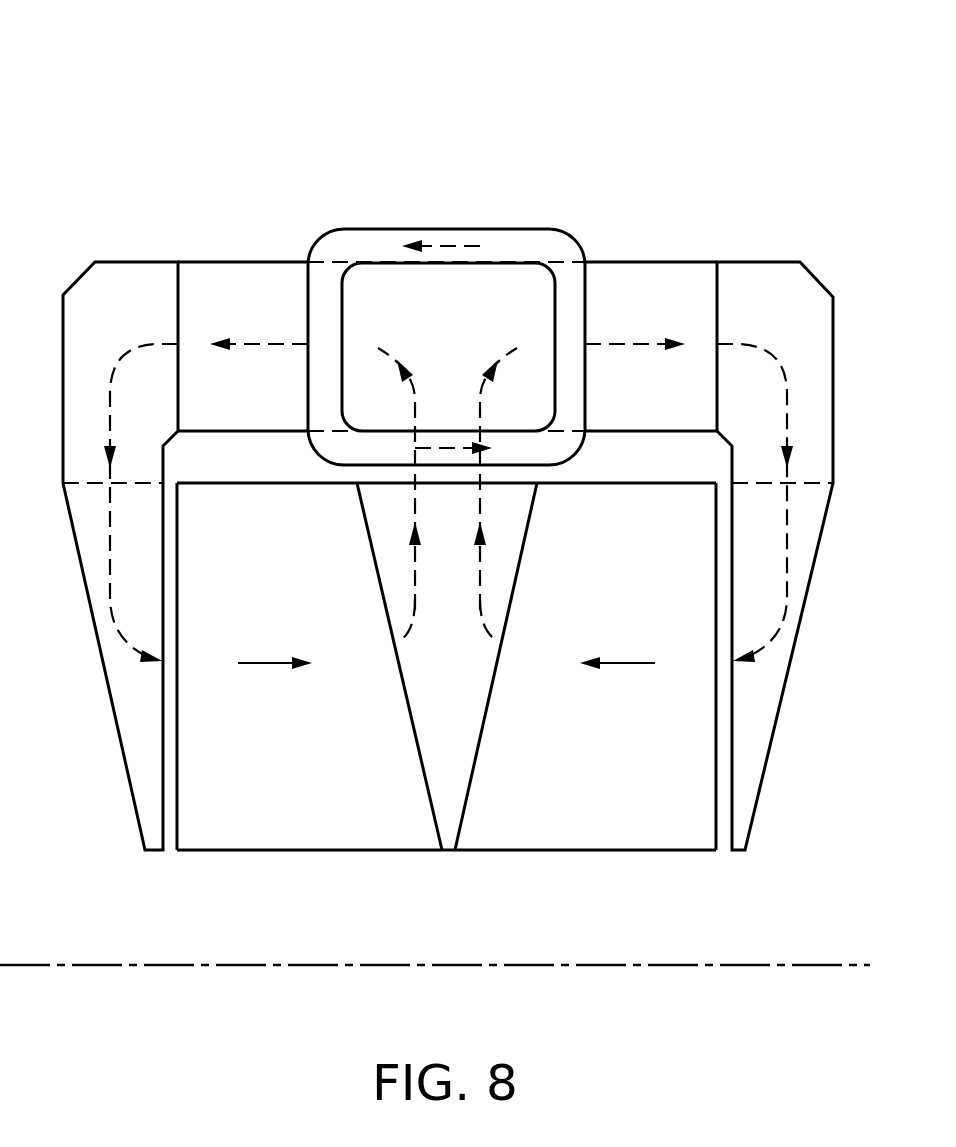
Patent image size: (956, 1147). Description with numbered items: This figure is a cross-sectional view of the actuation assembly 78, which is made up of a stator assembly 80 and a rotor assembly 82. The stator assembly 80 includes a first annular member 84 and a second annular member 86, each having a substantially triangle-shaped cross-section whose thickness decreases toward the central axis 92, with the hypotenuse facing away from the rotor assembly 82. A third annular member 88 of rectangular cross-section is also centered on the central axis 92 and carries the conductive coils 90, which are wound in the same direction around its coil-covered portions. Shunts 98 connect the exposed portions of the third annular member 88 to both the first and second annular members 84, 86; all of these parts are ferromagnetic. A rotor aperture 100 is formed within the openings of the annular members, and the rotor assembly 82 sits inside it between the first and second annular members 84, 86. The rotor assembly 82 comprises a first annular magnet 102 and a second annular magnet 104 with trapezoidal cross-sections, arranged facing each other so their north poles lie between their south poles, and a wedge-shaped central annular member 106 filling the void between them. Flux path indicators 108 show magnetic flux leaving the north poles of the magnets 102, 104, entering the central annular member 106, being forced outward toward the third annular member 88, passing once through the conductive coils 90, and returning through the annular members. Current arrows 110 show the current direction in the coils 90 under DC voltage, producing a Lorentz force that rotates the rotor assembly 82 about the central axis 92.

The actuation assembly 78 is at (145, 106).
The stator assembly 80 is at (150, 262).
The rotor assembly 82 is at (673, 850).
The first annular member 84 is at (115, 690).
The second annular member 86 is at (775, 690).
The third annular member 88 is at (372, 316).
The conductive coils 90 is at (362, 230).
The central axis 92 is at (98, 965).
The shunts 98 is at (680, 270).
The rotor aperture 100 is at (142, 890).
The first annular magnet 102 is at (313, 850).
The second annular magnet 104 is at (588, 850).
The central annular member 106 is at (466, 757).
The flux path indicators 108 is at (108, 430).
The current arrows 110 is at (457, 246).